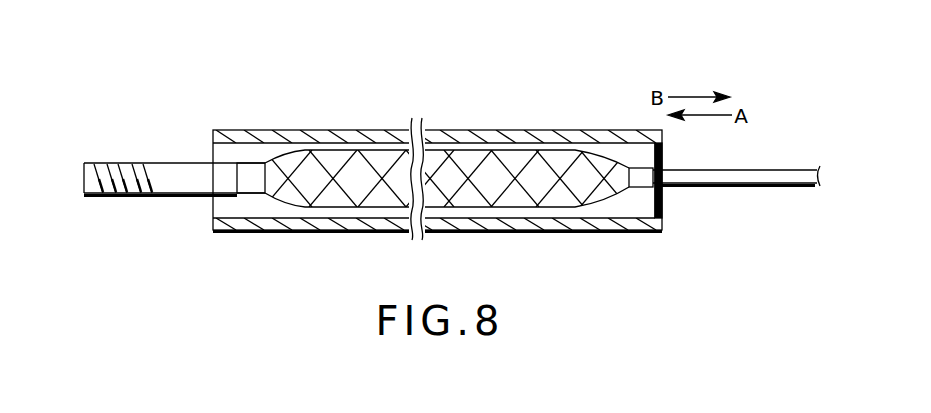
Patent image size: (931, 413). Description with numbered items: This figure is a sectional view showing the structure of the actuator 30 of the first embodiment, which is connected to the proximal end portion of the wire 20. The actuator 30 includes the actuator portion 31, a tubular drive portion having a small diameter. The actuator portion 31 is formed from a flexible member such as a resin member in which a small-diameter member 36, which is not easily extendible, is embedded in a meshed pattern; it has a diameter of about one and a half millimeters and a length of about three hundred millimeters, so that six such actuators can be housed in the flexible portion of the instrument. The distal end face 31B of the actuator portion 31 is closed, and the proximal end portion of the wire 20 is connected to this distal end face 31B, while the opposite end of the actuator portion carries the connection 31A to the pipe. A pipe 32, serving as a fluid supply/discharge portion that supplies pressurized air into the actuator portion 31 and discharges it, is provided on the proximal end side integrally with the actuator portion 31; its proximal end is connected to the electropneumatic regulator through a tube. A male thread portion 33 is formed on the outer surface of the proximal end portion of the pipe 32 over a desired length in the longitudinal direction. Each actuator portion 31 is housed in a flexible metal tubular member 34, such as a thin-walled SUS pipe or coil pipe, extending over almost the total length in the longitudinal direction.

The wire 20 is at (777, 169).
The actuator 30 is at (523, 120).
The actuator portion 31 is at (446, 182).
The proximal connector of stent 31A is at (237, 180).
The distal end face 31B is at (660, 190).
The pipe 32 is at (173, 176).
The male thread portion 33 is at (115, 196).
The metal tubular member 34 is at (281, 225).
The small-diameter member 36 is at (515, 201).